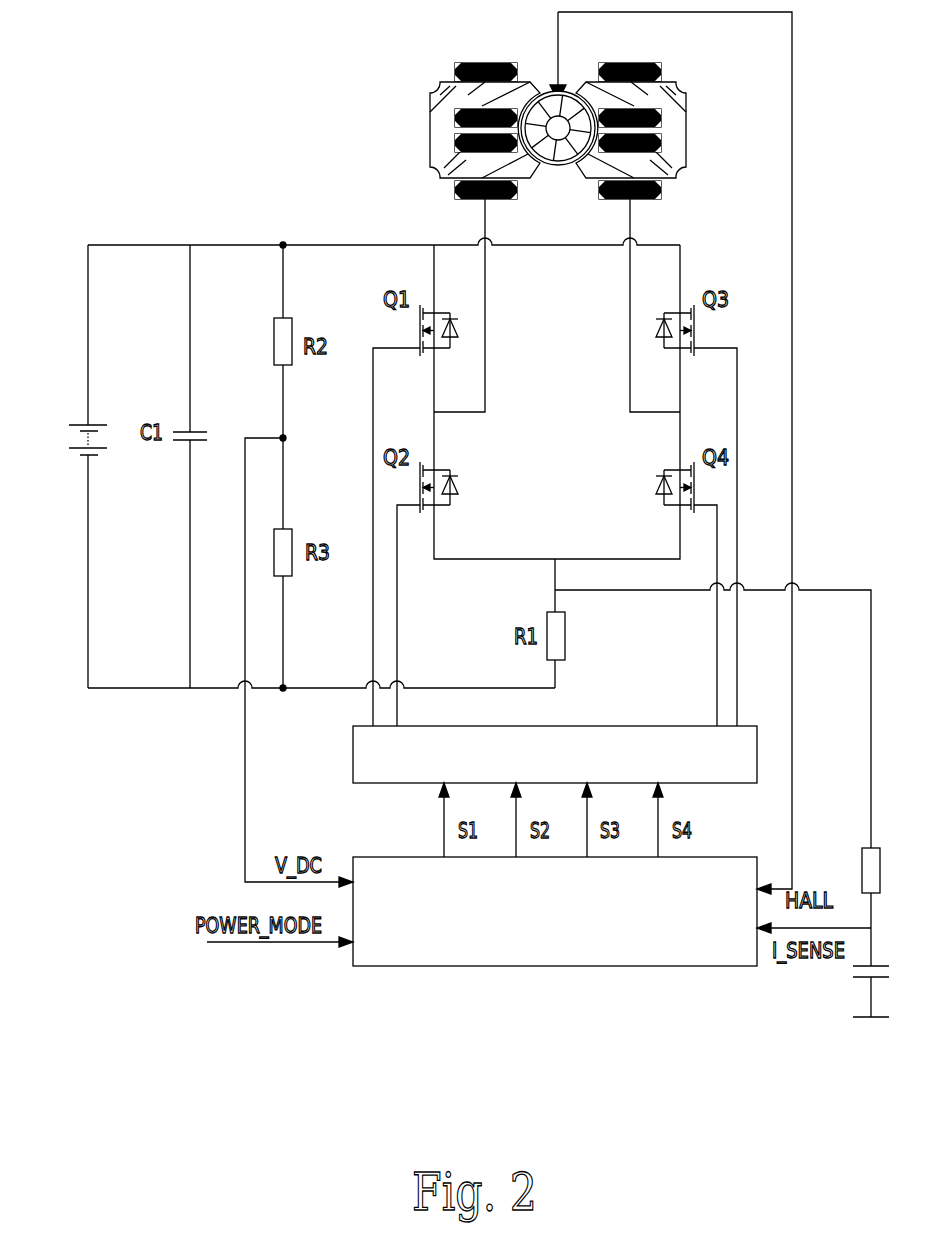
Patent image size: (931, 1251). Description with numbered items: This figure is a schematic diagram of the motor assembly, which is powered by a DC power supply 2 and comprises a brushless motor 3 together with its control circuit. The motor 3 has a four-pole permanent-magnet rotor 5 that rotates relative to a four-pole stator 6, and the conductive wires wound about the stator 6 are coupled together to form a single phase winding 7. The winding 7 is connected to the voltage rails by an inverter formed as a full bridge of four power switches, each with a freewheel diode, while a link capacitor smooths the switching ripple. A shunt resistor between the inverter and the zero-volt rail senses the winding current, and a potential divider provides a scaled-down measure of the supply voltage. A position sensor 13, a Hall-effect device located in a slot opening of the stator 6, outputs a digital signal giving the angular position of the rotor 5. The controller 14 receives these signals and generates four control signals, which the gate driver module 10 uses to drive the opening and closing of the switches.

The DC power supply 2 is at (70, 446).
The brushless motor 3 is at (424, 58).
The rotor 5 is at (558, 166).
The stator 6 is at (428, 127).
The phase winding 7 is at (487, 62).
The gate driver module 10 is at (353, 757).
The position sensor 13 is at (557, 83).
The controller 14 is at (628, 968).